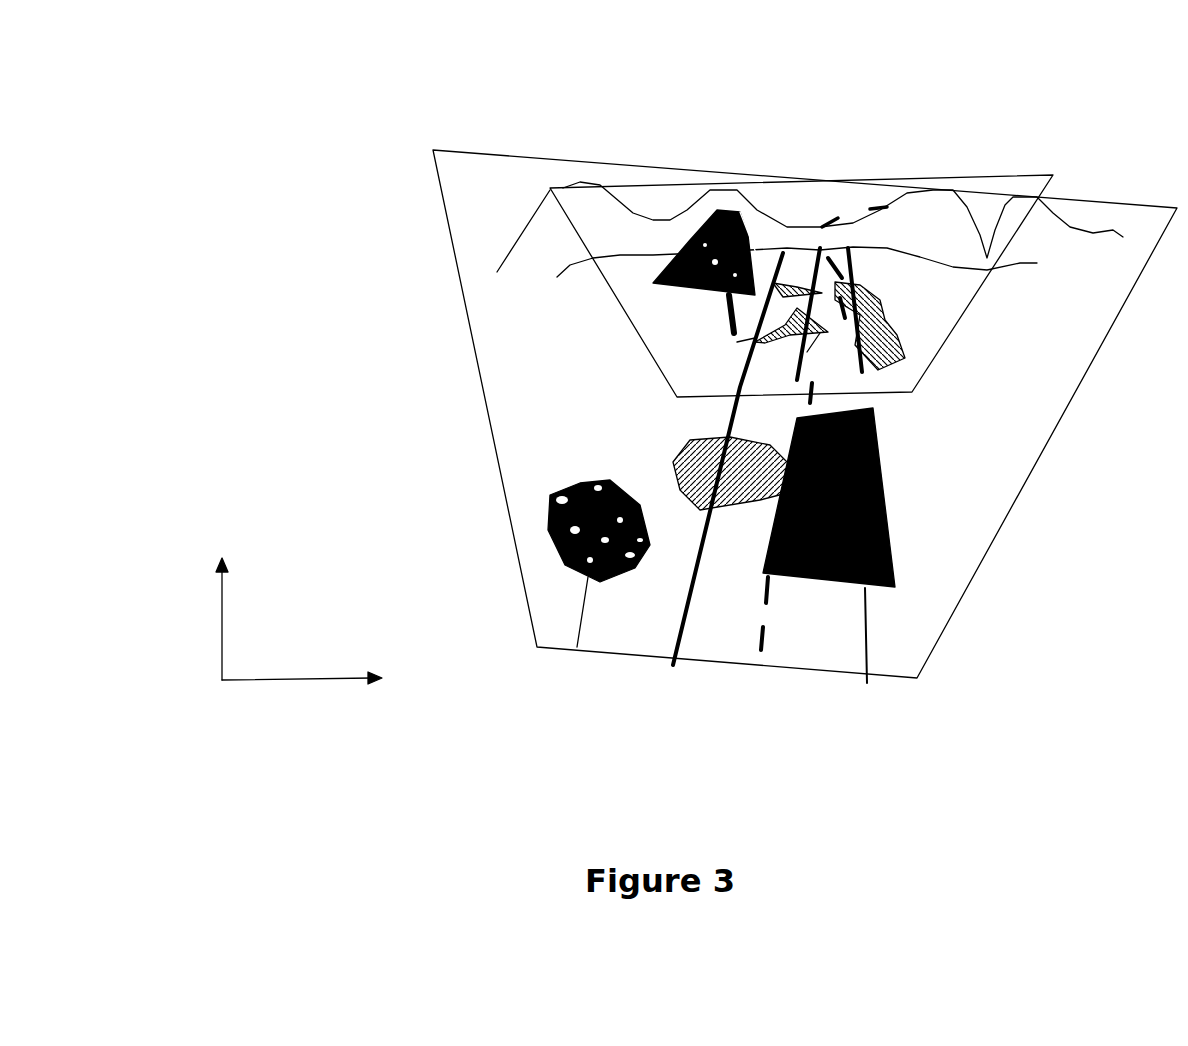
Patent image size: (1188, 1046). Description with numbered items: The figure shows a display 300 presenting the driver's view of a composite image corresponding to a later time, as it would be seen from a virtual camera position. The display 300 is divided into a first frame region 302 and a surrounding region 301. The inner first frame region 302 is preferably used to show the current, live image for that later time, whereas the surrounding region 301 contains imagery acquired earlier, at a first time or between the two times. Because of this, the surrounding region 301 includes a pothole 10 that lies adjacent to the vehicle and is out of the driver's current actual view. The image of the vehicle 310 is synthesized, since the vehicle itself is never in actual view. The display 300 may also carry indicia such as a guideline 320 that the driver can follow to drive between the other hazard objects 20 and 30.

The display 300 is at (330, 167).
The surrounding region 301 is at (537, 352).
The first frame region 302 is at (775, 190).
The guideline 320 is at (868, 205).
The vehicle 310 is at (895, 548).
The hazard object 30 is at (851, 326).
The hazard object 20 is at (704, 305).
The pothole 10 is at (717, 507).